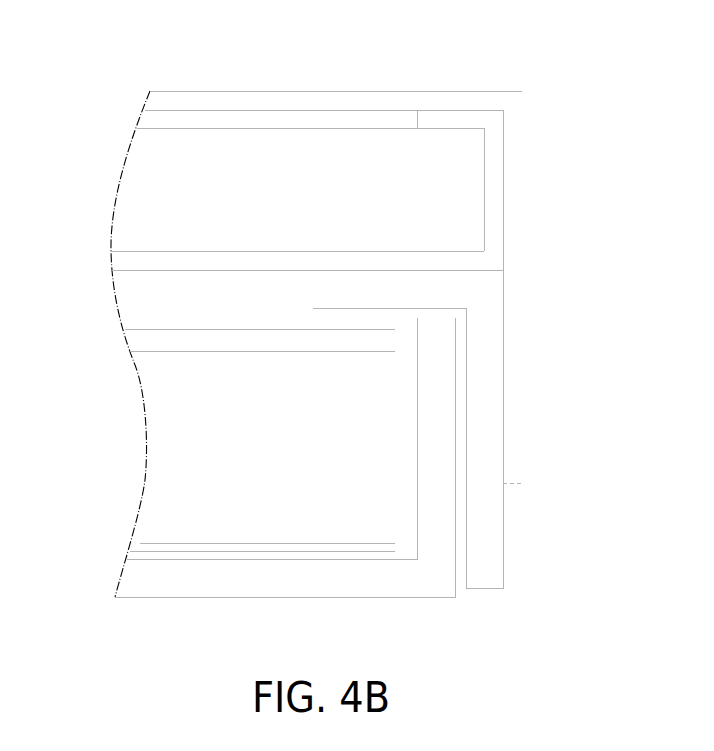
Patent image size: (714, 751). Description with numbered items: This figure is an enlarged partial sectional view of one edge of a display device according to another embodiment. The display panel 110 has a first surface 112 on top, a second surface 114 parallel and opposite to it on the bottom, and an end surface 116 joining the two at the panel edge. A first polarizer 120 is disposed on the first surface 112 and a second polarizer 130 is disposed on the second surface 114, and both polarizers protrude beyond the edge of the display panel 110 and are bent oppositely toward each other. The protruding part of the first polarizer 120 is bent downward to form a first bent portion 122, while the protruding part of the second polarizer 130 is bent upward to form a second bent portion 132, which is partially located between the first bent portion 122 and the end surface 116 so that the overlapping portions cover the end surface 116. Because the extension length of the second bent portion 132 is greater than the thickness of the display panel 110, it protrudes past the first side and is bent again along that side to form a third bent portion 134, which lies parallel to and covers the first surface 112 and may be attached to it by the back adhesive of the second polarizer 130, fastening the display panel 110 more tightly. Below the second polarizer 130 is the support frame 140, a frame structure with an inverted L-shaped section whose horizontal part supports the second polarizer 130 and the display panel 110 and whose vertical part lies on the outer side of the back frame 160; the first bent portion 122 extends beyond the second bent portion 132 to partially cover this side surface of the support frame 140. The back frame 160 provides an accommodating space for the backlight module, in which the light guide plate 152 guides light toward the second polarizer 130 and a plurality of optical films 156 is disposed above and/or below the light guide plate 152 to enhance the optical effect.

The display panel 110 is at (230, 140).
The first surface 112 is at (180, 130).
The second surface 114 is at (142, 250).
The end surface 116 is at (490, 139).
The first polarizer 120 is at (362, 100).
The first bent portion 122 is at (515, 218).
The second polarizer 130 is at (283, 260).
The second bent portion 132 is at (493, 167).
The third bent portion 134 is at (447, 120).
The support frame 140 is at (482, 510).
The light guide plate 152 is at (252, 493).
The optical films 156 is at (125, 333).
The back frame 160 is at (403, 597).